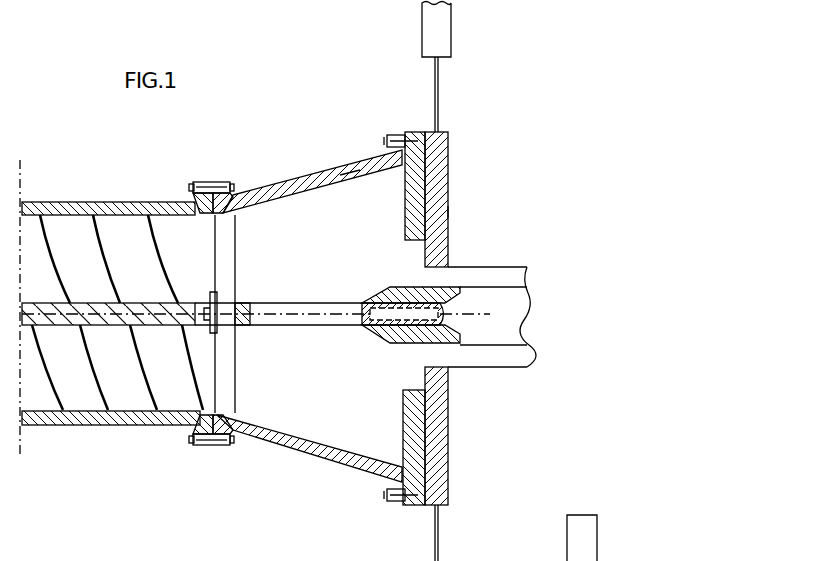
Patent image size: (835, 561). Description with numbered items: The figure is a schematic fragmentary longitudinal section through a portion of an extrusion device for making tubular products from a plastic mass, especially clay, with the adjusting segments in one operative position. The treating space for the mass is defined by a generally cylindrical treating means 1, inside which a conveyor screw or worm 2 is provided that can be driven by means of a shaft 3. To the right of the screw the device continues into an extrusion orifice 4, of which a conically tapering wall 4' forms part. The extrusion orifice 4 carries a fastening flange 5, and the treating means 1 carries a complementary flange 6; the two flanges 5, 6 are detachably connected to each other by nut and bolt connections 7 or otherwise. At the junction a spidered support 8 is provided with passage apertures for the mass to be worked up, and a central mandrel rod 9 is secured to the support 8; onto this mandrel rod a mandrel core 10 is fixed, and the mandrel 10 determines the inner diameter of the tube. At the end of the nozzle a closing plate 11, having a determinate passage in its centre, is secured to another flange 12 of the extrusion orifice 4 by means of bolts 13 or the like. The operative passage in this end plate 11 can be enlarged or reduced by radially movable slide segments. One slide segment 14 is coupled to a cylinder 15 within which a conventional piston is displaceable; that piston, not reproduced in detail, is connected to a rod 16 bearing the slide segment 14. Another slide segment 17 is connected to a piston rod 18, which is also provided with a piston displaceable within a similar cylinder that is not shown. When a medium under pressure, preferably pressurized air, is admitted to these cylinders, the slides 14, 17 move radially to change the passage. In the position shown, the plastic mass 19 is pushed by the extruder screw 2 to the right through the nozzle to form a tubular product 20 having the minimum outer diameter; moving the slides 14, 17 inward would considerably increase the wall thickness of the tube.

The treating means 1 is at (58, 200).
The conveyor screw 2 is at (147, 373).
The shaft 3 is at (70, 322).
The extrusion orifice 4 is at (309, 306).
The conically tapering wall 4' is at (350, 152).
The fastening flange 5 is at (220, 181).
The complementary flange 6 is at (201, 181).
The nut and bolt connections 7 is at (190, 184).
The spidered support 8 is at (230, 350).
The mandrel rod 9 is at (315, 328).
The mandrel core 10 is at (437, 289).
The closing plate 11 is at (425, 190).
The flange 12 is at (395, 130).
The bolts 13 is at (383, 500).
The slide segment 14 is at (448, 212).
The cylinder 15 is at (446, 14).
The rod 16 is at (438, 83).
The slide segment 17 is at (435, 420).
The piston rod 18 is at (438, 527).
The plastic mass 19 is at (298, 265).
The tubular product 20 is at (528, 277).